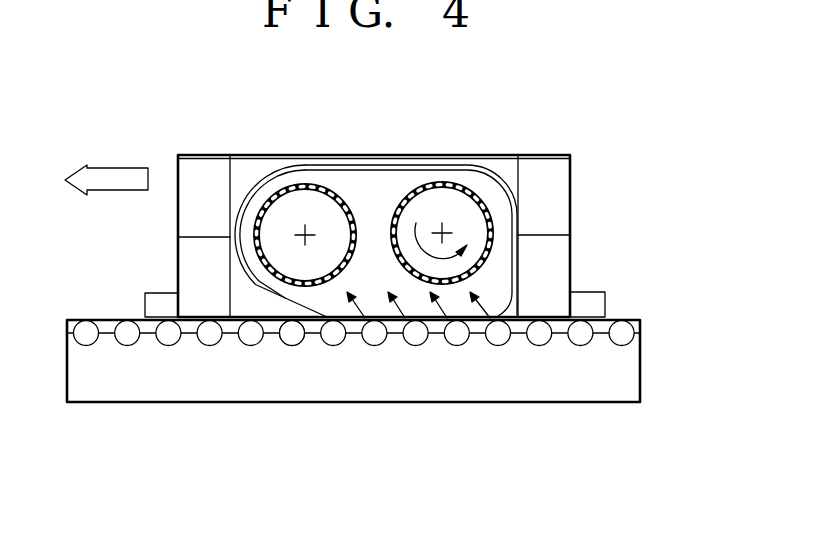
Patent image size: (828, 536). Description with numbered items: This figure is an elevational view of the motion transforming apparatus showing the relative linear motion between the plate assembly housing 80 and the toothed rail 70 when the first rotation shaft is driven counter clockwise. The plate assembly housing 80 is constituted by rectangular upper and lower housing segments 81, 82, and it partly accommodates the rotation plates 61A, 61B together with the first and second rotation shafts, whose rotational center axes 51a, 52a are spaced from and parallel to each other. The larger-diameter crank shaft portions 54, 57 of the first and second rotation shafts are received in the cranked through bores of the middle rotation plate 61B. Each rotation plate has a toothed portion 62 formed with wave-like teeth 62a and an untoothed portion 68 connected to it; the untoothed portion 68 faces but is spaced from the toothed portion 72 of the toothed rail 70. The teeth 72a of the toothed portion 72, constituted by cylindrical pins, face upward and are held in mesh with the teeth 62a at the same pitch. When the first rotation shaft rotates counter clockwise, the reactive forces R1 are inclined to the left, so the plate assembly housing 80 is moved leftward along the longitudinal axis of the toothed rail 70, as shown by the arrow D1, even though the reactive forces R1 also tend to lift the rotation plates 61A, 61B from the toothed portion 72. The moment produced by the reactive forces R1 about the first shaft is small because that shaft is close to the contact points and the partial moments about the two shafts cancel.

The plate assembly housing 80 is at (572, 180).
The upper housing segment 81 is at (176, 176).
The lower housing segment 82 is at (185, 255).
The rotational center axis of first rotation shaft 51a is at (446, 229).
The rotational center axis of second rotation shaft 52a is at (298, 232).
The crank shaft portion 54 is at (435, 202).
The crank shaft portion 57 is at (290, 208).
The rotation plate 61A is at (486, 165).
The rotation plate 61B is at (362, 178).
The toothed portion 62 is at (513, 287).
The teeth 62a is at (354, 323).
The untoothed portion 68 is at (270, 303).
The toothed rail 70 is at (643, 358).
The toothed portion 72 is at (642, 326).
The teeth 72a is at (306, 340).
The reactive forces R1 is at (437, 318).
The arrow D1 is at (106, 165).